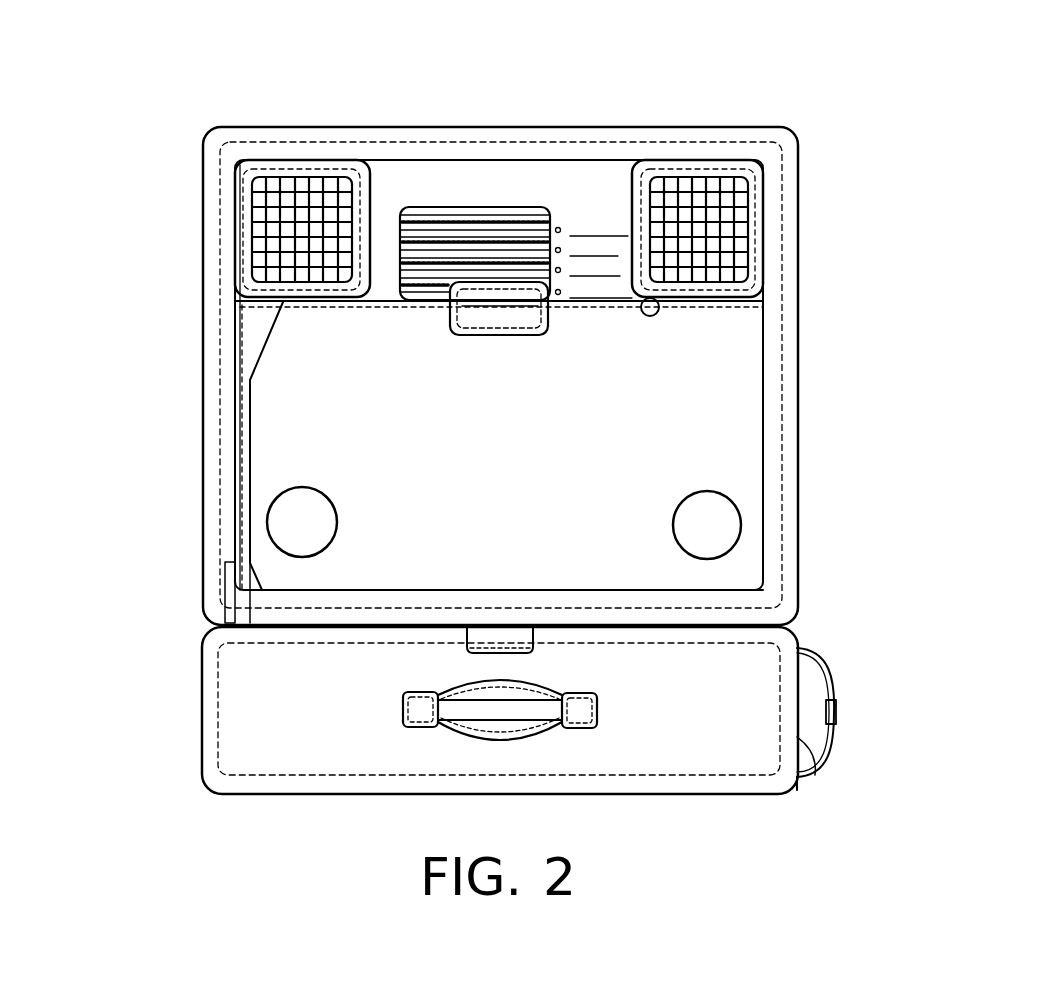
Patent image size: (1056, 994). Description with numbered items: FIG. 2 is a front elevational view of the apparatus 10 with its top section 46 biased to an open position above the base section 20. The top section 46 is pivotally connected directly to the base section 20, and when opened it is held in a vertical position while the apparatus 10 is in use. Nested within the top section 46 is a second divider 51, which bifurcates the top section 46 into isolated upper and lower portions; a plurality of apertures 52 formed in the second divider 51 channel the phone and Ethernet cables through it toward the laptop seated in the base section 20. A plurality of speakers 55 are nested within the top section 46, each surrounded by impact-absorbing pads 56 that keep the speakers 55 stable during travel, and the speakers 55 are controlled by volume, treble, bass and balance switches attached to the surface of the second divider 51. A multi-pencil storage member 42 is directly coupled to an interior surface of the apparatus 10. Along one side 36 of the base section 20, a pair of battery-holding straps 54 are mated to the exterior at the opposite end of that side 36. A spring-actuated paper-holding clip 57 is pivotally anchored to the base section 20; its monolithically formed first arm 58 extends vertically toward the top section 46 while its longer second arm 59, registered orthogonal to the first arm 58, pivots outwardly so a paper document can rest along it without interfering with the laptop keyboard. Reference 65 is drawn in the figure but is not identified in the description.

The apparatus 10 is at (977, 123).
The base section 20 is at (730, 795).
The one side 36 is at (812, 775).
The multi-pencil storage member 42 is at (540, 210).
The top section 46 is at (800, 560).
The second divider 51 is at (740, 447).
The apertures 52 is at (282, 519).
The battery-holding straps 54 is at (833, 683).
The speakers 55 is at (252, 243).
The impact-absorbing pads 56 is at (238, 188).
The paper-holding clip 57 is at (477, 278).
The first arm 58 is at (350, 307).
The second arm 59 is at (240, 462).
The strap anchor 65 is at (802, 783).